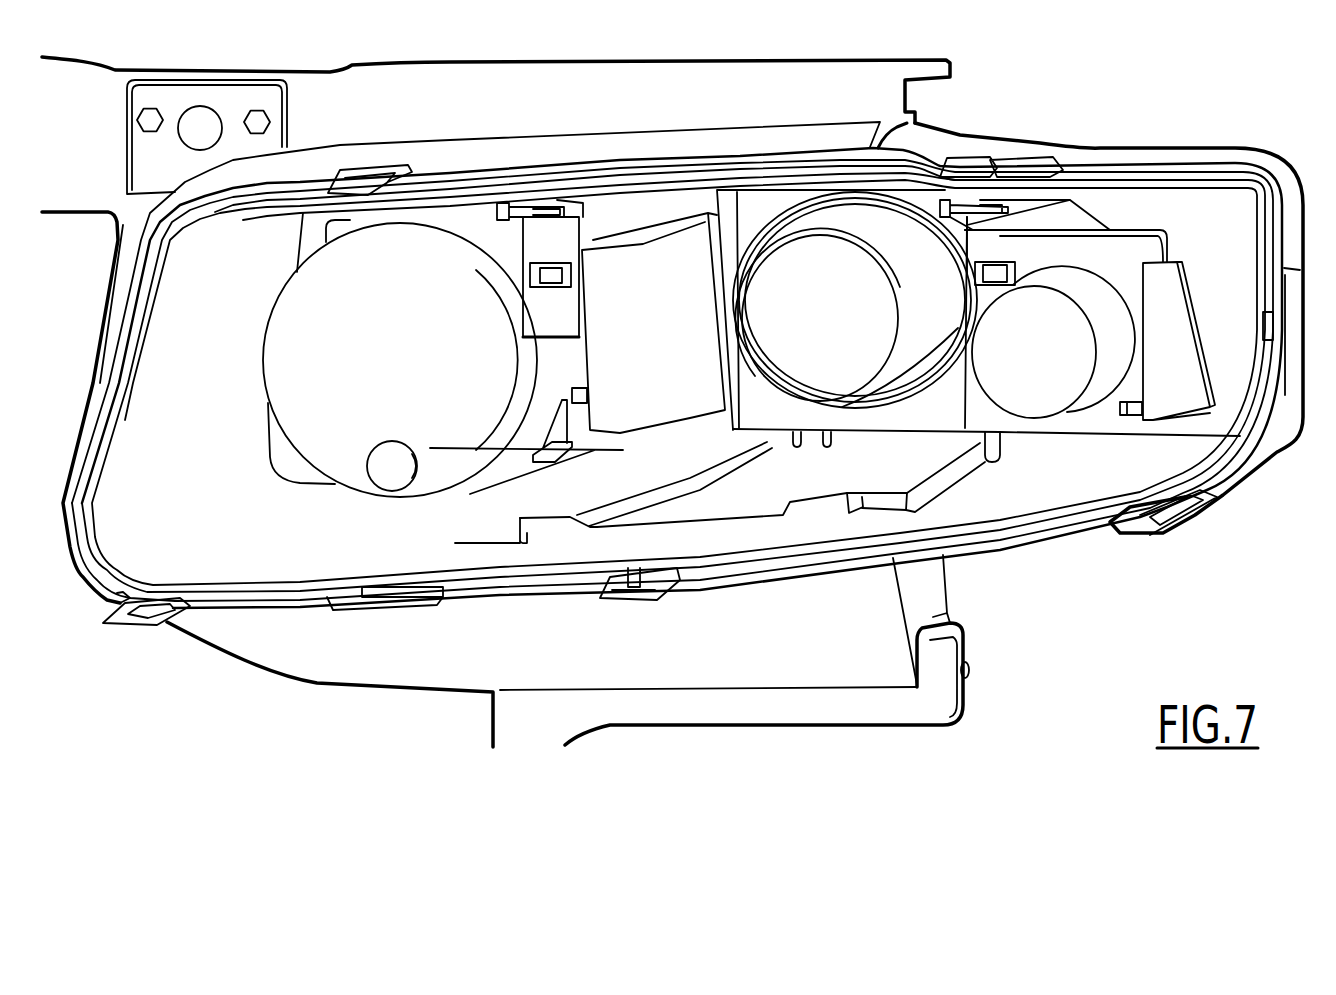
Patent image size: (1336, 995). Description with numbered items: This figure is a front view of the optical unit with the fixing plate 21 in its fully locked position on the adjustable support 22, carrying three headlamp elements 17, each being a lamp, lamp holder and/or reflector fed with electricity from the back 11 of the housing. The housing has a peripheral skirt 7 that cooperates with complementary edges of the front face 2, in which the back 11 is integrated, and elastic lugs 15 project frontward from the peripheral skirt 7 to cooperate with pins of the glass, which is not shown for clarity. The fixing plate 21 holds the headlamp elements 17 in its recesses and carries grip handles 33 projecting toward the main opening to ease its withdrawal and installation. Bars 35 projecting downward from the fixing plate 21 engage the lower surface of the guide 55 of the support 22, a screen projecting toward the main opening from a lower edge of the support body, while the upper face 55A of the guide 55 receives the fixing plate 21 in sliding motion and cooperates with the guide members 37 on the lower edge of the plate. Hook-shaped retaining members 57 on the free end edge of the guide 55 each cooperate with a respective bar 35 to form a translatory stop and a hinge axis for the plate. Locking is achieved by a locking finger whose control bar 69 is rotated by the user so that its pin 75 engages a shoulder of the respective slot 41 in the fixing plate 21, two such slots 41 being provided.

The front face 2 is at (325, 84).
The peripheral skirt 7 is at (1283, 258).
The back 11 is at (1213, 188).
The elastic lugs 15 is at (368, 178).
The headlamp elements 17 is at (699, 344).
The fixing plate 21 is at (1085, 432).
The adjustable support 22 is at (1092, 210).
The grip handles 33 is at (625, 420).
The bars 35 is at (977, 460).
The guide members 37 is at (798, 448).
The slots 41 is at (527, 290).
The guide 55 is at (927, 453).
The upper face of the guide 55A is at (713, 484).
The retaining members 57 is at (460, 540).
The control bar 69 is at (507, 218).
The pin 75 is at (572, 278).